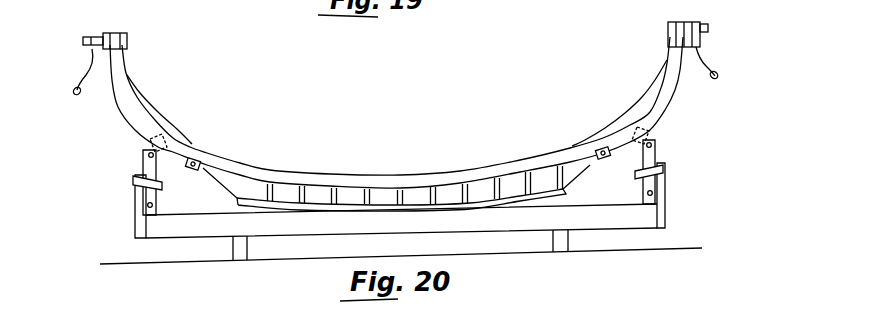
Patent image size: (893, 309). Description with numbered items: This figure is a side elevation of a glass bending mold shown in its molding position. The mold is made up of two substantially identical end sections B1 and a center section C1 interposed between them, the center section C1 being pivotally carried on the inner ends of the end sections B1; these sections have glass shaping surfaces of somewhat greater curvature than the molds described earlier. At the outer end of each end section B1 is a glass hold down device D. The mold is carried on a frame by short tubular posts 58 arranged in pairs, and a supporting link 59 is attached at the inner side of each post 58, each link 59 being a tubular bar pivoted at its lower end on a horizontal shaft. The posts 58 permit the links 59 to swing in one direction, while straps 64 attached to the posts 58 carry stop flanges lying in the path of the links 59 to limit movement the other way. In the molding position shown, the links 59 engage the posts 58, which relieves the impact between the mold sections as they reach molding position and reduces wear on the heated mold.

The glass hold down device D is at (74, 42).
The end section B1 is at (719, 114).
The center section C1 is at (340, 173).
The post 58 is at (137, 198).
The supporting link 59 is at (143, 158).
The strap 64 is at (163, 183).